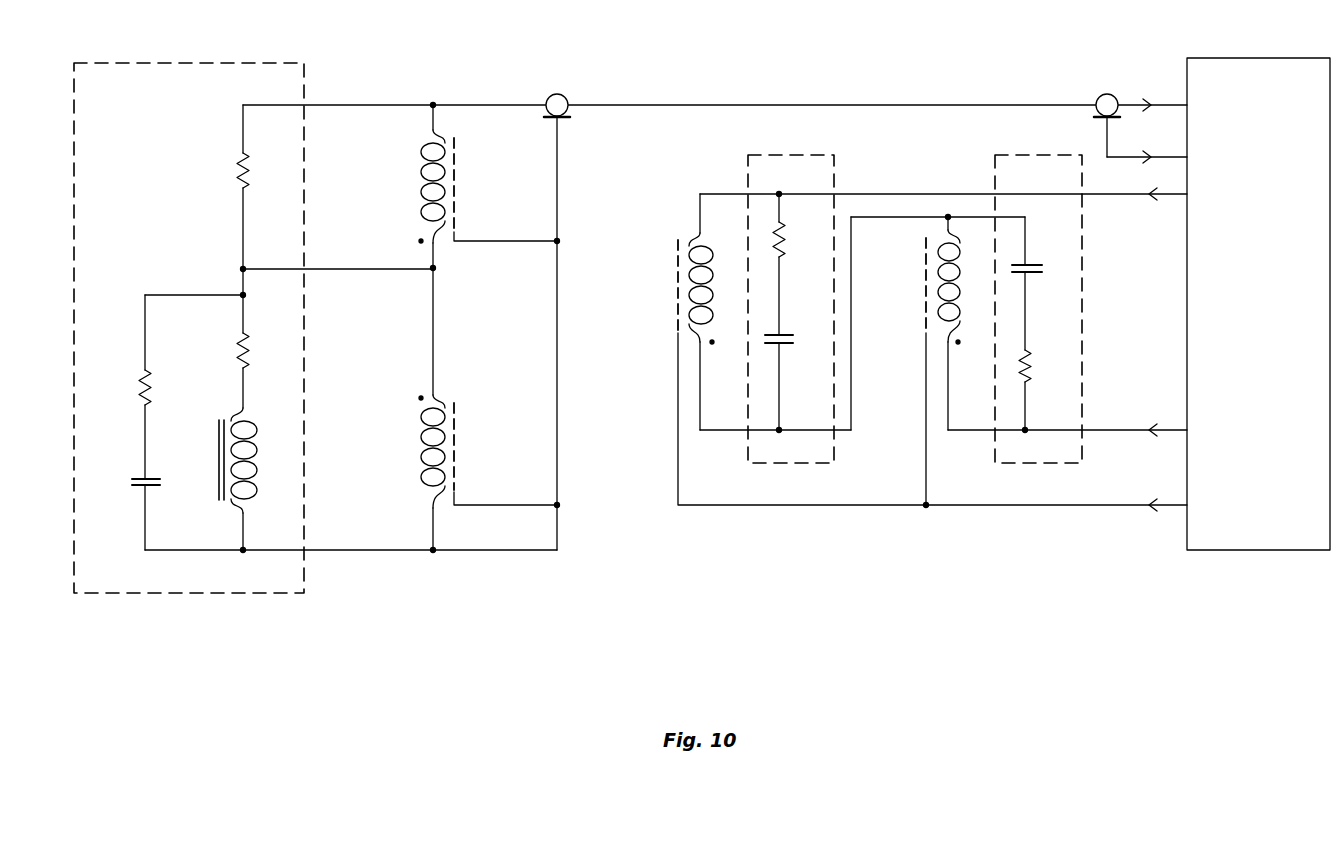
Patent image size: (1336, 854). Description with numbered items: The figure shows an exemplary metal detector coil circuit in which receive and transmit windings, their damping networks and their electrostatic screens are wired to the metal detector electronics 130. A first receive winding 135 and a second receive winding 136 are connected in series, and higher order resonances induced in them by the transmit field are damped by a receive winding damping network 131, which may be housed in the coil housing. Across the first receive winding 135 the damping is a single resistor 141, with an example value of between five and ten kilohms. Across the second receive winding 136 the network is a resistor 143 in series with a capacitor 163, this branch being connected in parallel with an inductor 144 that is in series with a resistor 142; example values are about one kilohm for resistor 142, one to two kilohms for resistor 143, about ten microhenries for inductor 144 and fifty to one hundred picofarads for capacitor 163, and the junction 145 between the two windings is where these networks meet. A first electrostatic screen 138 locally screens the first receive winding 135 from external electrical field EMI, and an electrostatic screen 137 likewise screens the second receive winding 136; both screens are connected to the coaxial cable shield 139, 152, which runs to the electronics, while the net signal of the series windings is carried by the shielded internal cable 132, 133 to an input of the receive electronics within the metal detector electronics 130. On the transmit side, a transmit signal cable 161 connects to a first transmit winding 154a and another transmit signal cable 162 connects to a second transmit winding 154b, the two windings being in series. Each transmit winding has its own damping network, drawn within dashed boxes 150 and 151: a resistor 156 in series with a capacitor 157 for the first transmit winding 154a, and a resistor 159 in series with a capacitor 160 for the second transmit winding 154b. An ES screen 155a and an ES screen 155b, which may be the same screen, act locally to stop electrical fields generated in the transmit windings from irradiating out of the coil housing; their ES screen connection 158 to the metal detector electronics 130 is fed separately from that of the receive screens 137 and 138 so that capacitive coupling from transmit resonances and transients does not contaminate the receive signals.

The metal detector electronics 130 is at (1258, 304).
The receive winding damping network 131 is at (189, 328).
The shielded internal cable 132 is at (370, 105).
The shielded internal cable 133 is at (1130, 105).
The first receive winding 135 is at (420, 180).
The second receive winding 136 is at (420, 442).
The electrostatic screen 137 is at (455, 425).
The first electrostatic screen 138 is at (455, 192).
The coaxial cable shield 139 is at (558, 190).
The resistor 141 is at (240, 170).
The resistor 142 is at (240, 348).
The resistor 143 is at (152, 388).
The inductor 144 is at (230, 505).
The connection node 145 is at (394, 270).
The filter circuit 150 is at (791, 309).
The filter circuit 151 is at (1038, 309).
The coaxial cable shield 152 is at (1106, 138).
The first transmit winding 154a is at (712, 258).
The second transmit winding 154b is at (963, 258).
The electrostatic screen 155a is at (678, 288).
The electrostatic screen 155b is at (926, 288).
The resistor 156 is at (784, 245).
The capacitor 157 is at (789, 345).
The ES screen connection 158 is at (893, 505).
The resistor 159 is at (1034, 362).
The capacitor 160 is at (1042, 252).
The transmit signal cable 161 is at (1168, 194).
The transmit signal cable 162 is at (1172, 430).
The capacitor 163 is at (118, 490).